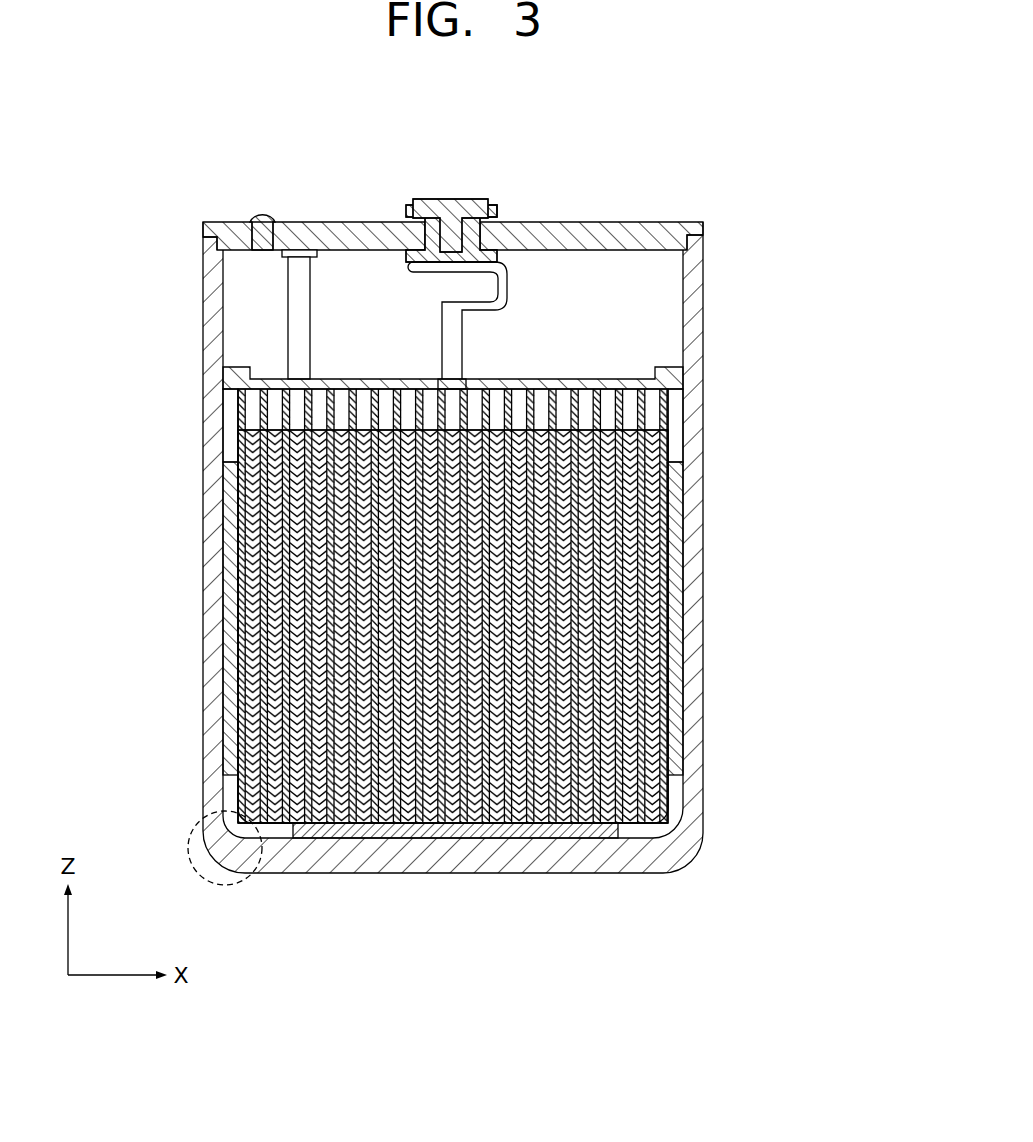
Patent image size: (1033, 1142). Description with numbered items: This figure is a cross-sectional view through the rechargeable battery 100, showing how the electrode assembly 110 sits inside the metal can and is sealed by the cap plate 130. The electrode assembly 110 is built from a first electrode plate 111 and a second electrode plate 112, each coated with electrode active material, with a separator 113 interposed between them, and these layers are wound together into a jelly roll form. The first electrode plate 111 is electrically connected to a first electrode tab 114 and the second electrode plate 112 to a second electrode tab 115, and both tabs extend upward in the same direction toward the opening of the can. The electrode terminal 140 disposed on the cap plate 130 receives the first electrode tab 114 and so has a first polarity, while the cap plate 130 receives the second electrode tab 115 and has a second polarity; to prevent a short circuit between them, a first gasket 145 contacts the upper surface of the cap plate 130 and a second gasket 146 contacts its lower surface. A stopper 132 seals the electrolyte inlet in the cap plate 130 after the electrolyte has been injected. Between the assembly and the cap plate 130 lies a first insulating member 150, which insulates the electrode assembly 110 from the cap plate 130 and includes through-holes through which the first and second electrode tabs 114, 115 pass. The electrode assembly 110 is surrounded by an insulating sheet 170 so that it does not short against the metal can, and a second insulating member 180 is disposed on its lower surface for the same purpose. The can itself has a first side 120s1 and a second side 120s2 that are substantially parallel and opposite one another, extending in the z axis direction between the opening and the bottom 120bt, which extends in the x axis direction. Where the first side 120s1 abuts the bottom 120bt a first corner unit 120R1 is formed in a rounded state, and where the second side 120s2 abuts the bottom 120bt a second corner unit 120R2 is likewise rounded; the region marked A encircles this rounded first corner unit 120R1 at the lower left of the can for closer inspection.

The rechargeable battery 100 is at (482, 517).
The electrode assembly 110 is at (549, 606).
The first electrode plate 111 is at (633, 483).
The second electrode plate 112 is at (662, 441).
The separator 113 is at (652, 461).
The first electrode tab 114 is at (458, 327).
The second electrode tab 115 is at (297, 308).
The first side 120s1 is at (222, 373).
The second side 120s2 is at (703, 354).
The bottom 120bt is at (471, 857).
The first corner unit 120R1 is at (224, 870).
The second corner unit 120R2 is at (687, 864).
The cap plate 130 is at (620, 220).
The stopper 132 is at (267, 214).
The electrode terminal 140 is at (452, 206).
The first gasket 145 is at (498, 212).
The second gasket 146 is at (395, 222).
The first insulating member 150 is at (673, 380).
The insulating sheet 170 is at (232, 692).
The second insulating member 180 is at (359, 837).
The detail region A is at (195, 830).